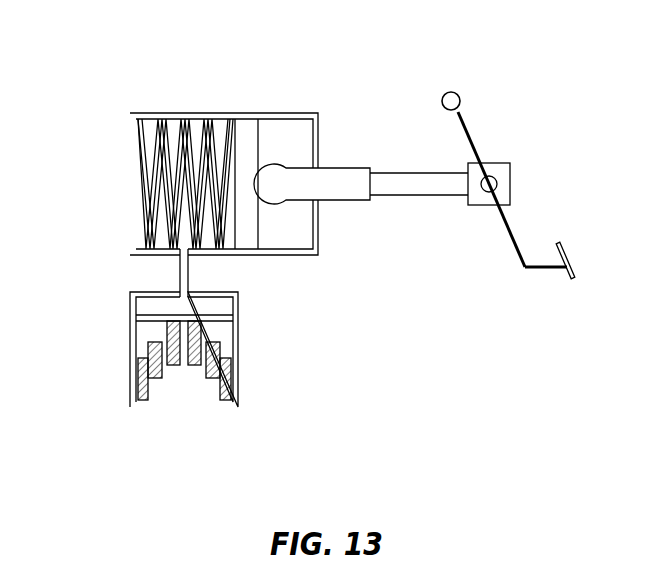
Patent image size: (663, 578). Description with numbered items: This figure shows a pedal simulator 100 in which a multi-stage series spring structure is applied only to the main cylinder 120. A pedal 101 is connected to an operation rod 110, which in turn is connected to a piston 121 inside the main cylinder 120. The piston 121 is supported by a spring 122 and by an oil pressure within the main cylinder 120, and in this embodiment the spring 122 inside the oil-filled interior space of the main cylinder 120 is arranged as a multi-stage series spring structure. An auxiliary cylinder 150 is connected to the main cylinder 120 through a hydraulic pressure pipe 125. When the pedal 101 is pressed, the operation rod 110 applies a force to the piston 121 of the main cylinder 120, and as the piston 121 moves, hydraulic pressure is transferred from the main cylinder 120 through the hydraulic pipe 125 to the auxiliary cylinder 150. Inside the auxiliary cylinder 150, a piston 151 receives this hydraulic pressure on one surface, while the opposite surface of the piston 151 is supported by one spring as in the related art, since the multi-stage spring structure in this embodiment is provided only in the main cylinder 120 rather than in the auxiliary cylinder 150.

The pedal apparatus 100 is at (525, 152).
The pedal arm 101 is at (514, 232).
The operation rod 110 is at (355, 173).
The main cylinder 120 is at (178, 120).
The piston 121 is at (249, 128).
The spring 122 is at (133, 183).
The hydraulic pressure pipe 125 is at (190, 277).
The auxiliary cylinder 150 is at (238, 380).
The piston 151 is at (238, 312).